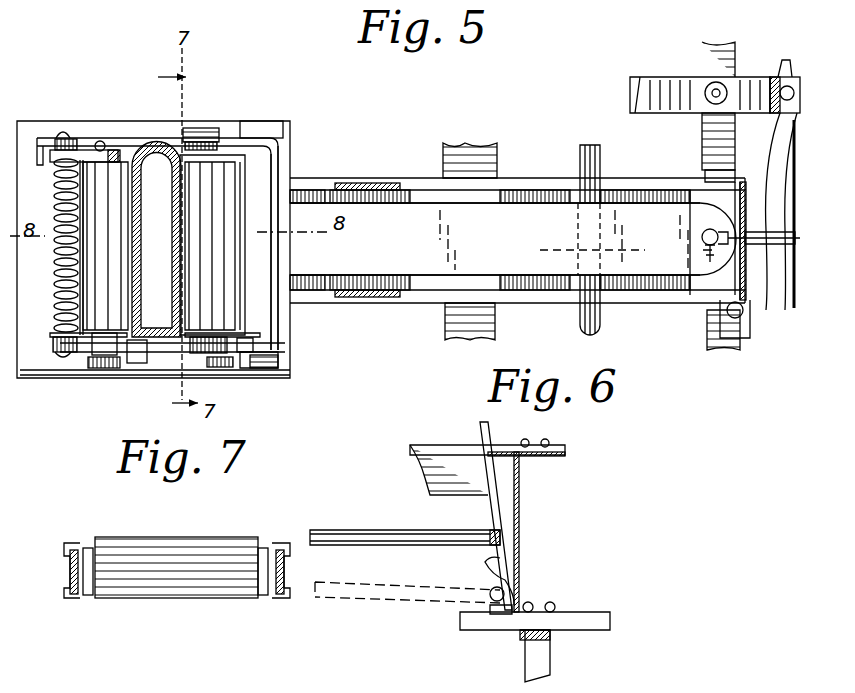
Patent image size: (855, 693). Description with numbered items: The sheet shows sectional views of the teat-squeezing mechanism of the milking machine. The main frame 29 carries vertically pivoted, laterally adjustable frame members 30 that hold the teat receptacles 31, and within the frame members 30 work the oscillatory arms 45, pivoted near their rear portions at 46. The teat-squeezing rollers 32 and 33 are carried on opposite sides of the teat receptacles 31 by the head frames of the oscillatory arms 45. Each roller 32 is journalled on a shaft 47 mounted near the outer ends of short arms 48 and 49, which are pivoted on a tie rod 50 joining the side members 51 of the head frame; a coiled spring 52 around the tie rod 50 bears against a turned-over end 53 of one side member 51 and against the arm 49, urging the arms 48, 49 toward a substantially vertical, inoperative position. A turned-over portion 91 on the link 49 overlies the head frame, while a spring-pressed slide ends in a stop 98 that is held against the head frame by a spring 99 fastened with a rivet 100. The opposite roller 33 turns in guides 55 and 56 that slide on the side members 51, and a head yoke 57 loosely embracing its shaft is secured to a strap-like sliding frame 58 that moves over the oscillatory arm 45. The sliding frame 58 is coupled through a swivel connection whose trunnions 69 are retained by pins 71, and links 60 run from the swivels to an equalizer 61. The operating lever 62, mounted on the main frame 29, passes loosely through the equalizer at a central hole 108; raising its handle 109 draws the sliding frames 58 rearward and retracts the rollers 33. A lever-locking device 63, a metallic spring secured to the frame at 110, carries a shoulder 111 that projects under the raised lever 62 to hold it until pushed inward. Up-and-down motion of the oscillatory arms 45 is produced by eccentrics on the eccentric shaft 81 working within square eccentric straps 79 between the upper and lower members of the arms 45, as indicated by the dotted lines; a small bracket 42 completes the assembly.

In FIG. 5, the main frame 29 is at (715, 72).
In FIG. 6, the main frame 29 is at (568, 444).
In FIG. 5, the frame members 30 is at (323, 178).
In FIG. 5, the teat receptacles 31 is at (143, 230).
In FIG. 5, the teat-squeezing roller 32 is at (118, 180).
In FIG. 5, the teat-squeezing roller 33 is at (216, 255).
In FIG. 7, the teat-squeezing roller 33 is at (170, 562).
In FIG. 5, the support bracket 42 is at (716, 170).
In FIG. 5, the oscillatory arms 45 is at (510, 195).
In FIG. 5, the pivot of oscillatory arms 46 is at (732, 312).
In FIG. 5, the shaft 47 is at (112, 150).
In FIG. 5, the short arm 48 is at (95, 150).
In FIG. 5, the short arm 49 is at (90, 358).
In FIG. 5, the tie rod 50 is at (60, 299).
In FIG. 5, the side members 51 is at (153, 138).
In FIG. 7, the side members 51 is at (72, 548).
In FIG. 5, the coiled spring 52 is at (58, 250).
In FIG. 5, the turned-over end 53 is at (42, 140).
In FIG. 5, the guide 55 is at (202, 130).
In FIG. 5, the guide 56 is at (208, 366).
In FIG. 5, the head yoke 57 is at (283, 163).
In FIG. 7, the head yoke 57 is at (87, 598).
In FIG. 5, the sliding frame 58 is at (513, 239).
In FIG. 5, the link 60 is at (762, 250).
In FIG. 5, the equalizer 61 is at (784, 128).
In FIG. 5, the operating lever 62 is at (796, 310).
In FIG. 6, the lever-locking device 63 is at (505, 505).
In FIG. 5, the trunnion 69 is at (702, 235).
In FIG. 5, the pin 71 is at (702, 248).
In FIG. 5, the square eccentric strap 79 is at (652, 280).
In FIG. 5, the eccentric shaft 81 is at (597, 168).
In FIG. 5, the turned-over portion 91 is at (110, 368).
In FIG. 5, the stop 98 is at (283, 370).
In FIG. 5, the spring 99 is at (308, 178).
In FIG. 5, the rivet 100 is at (255, 136).
In FIG. 5, the hole in equalizer 108 is at (786, 86).
In FIG. 6, the handle of lever 109 is at (428, 541).
In FIG. 6, the securing point of locking device 110 is at (500, 614).
In FIG. 6, the shoulder 111 is at (520, 556).